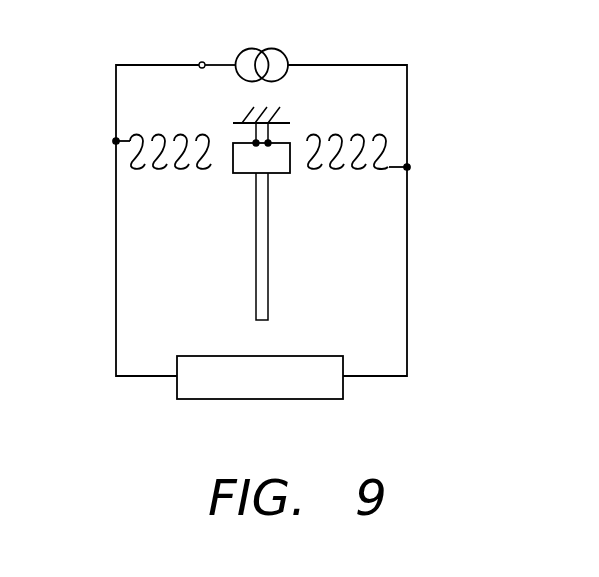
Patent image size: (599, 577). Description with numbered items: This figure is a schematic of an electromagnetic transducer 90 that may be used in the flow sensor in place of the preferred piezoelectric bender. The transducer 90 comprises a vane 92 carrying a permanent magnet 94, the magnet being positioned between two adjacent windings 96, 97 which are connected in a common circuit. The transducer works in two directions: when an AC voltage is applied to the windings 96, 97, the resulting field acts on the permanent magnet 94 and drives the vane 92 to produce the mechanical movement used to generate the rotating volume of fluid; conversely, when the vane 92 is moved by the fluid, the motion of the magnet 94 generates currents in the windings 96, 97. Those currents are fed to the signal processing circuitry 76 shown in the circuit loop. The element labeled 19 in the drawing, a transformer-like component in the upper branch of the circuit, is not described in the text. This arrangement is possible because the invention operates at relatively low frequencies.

The transformer 19 is at (283, 52).
The winding 96 is at (162, 135).
The winding 97 is at (359, 135).
The permanent magnet 94 is at (243, 175).
The electromagnetic transducer 90 is at (265, 217).
The vane 92 is at (268, 290).
The signal processing circuitry 76 is at (311, 382).